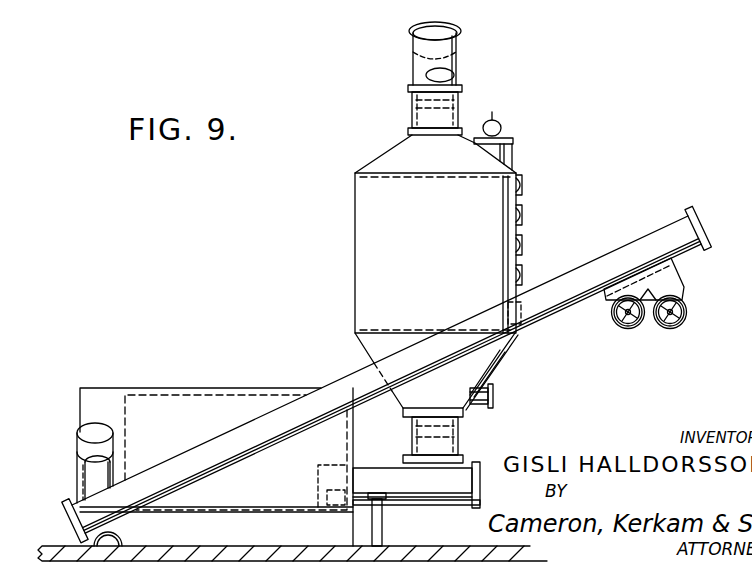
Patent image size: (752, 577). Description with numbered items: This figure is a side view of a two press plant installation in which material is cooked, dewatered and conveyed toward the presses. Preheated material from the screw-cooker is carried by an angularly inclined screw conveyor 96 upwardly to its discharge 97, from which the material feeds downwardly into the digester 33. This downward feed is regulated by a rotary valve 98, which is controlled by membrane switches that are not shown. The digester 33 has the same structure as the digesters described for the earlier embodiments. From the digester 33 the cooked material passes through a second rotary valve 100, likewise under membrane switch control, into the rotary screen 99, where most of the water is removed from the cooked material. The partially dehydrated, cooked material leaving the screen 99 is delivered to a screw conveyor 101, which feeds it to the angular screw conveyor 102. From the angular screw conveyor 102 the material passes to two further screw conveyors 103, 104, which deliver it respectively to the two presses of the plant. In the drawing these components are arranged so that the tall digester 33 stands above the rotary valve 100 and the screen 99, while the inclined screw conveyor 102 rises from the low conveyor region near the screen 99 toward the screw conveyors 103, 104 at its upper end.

The digester 33 is at (376, 246).
The screw conveyor 96 is at (418, 60).
The discharge 97 is at (410, 80).
The rotary valve 98 is at (420, 114).
The rotary screen 99 is at (190, 396).
The rotary valve 100 is at (412, 429).
The screw conveyor 101 is at (78, 441).
The angular screw conveyor 102 is at (362, 372).
The screw conveyor 103 is at (677, 318).
The screw conveyor 104 is at (620, 313).